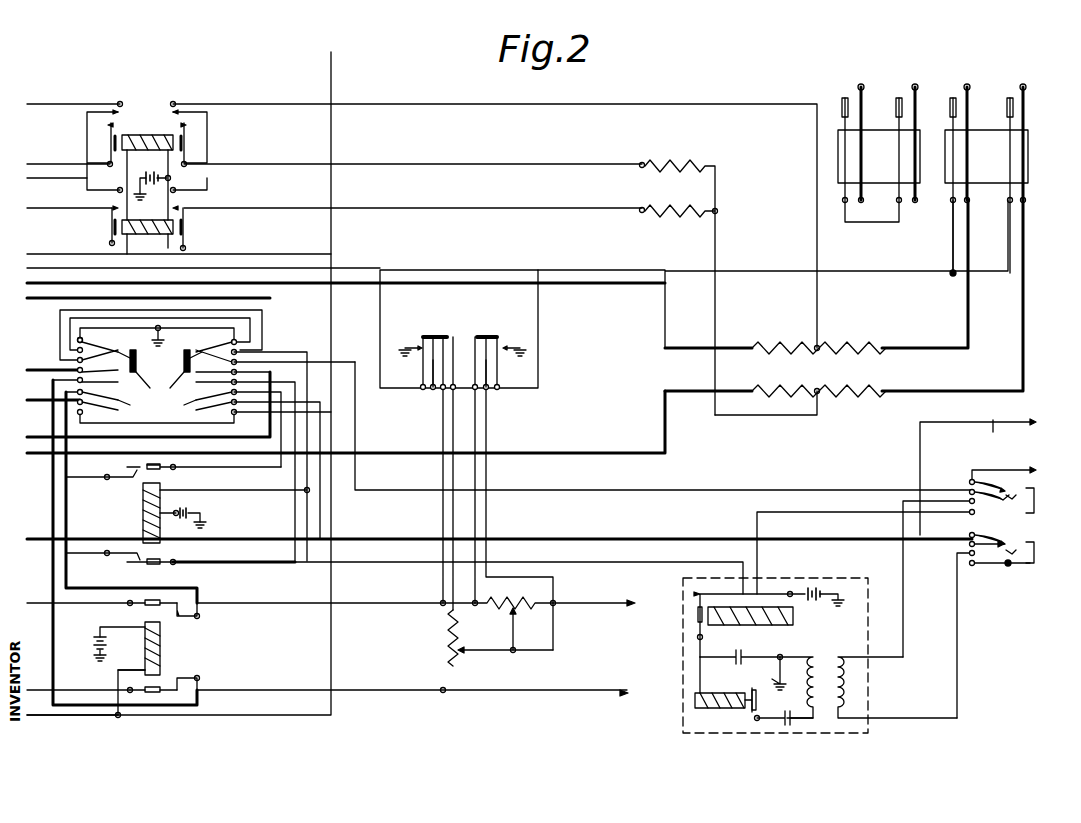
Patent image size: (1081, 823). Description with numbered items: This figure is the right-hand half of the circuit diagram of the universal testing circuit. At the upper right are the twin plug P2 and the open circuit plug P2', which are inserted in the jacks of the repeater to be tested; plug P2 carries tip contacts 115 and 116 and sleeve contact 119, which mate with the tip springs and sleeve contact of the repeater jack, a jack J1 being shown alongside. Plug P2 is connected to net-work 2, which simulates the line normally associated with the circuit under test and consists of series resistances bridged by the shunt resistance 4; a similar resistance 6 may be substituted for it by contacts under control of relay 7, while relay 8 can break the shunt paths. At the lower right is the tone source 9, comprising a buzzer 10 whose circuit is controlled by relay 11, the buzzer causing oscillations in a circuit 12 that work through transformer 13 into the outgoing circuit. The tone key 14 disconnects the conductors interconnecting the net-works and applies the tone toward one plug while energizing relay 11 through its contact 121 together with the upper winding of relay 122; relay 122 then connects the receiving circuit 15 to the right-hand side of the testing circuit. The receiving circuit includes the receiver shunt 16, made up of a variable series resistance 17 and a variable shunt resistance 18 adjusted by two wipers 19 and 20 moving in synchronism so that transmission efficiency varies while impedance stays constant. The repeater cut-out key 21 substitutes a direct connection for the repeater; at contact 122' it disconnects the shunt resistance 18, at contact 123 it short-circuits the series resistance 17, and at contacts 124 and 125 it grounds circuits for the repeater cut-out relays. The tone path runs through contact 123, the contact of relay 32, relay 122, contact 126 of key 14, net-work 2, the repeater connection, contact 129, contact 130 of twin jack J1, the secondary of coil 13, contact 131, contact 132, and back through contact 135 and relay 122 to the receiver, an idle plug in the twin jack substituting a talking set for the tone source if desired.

The net-work 2 is at (844, 307).
The shunt resistance 4 is at (683, 218).
The resistance 6 is at (690, 163).
The relay 7 is at (147, 180).
The relay 8 is at (147, 234).
The tone source 9 is at (848, 722).
The buzzer 10 is at (735, 712).
The relay 11 is at (760, 622).
The circuit 12 is at (780, 668).
The transformer 13 is at (830, 656).
The tone key 14 is at (204, 429).
The receiving circuit 15 is at (627, 630).
The receiver shunt 16 is at (471, 638).
The variable series resistance 17 is at (536, 601).
The variable shunt resistance 18 is at (458, 655).
The wiper 19 is at (515, 625).
The wiper 20 is at (512, 655).
The repeater cut-out key 21 is at (478, 336).
The relay 32 is at (160, 648).
The tip contact 115 is at (975, 70).
The tip contact 116 is at (1030, 70).
The sleeve contact 119 is at (979, 187).
The contact 121 is at (117, 348).
The relay 122 is at (186, 514).
The contact 122' is at (417, 385).
The contact 123 is at (480, 352).
The contact 124 is at (417, 350).
The contact 125 is at (501, 350).
The contact 126 is at (177, 412).
The contact 129 is at (135, 412).
The contact 130 is at (975, 537).
The contact 131 is at (962, 452).
The contact 132 is at (128, 366).
The contact 135 is at (175, 339).
The twin plug P2 is at (986, 148).
The open circuit plug P2' is at (879, 123).
The jack J1 is at (1020, 525).